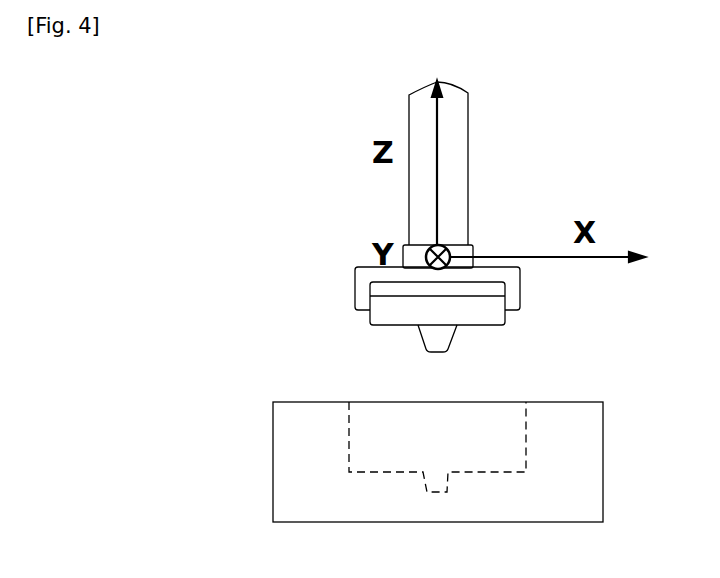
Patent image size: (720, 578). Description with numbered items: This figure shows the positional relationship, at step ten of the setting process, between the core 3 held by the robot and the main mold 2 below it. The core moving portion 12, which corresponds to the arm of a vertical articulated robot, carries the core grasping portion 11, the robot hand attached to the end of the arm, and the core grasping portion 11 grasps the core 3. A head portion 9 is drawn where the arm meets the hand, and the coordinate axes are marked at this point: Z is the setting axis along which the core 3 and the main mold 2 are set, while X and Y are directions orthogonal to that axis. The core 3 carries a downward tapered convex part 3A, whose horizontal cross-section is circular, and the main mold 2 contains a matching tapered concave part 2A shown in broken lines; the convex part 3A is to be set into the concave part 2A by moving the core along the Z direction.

The core moving portion 12 is at (468, 160).
The head 9 is at (468, 244).
The core grasping portion 11 is at (520, 288).
The core 3 is at (505, 317).
The convex part 3A is at (454, 338).
The main mold 2 is at (292, 402).
The concave part 2A is at (448, 483).